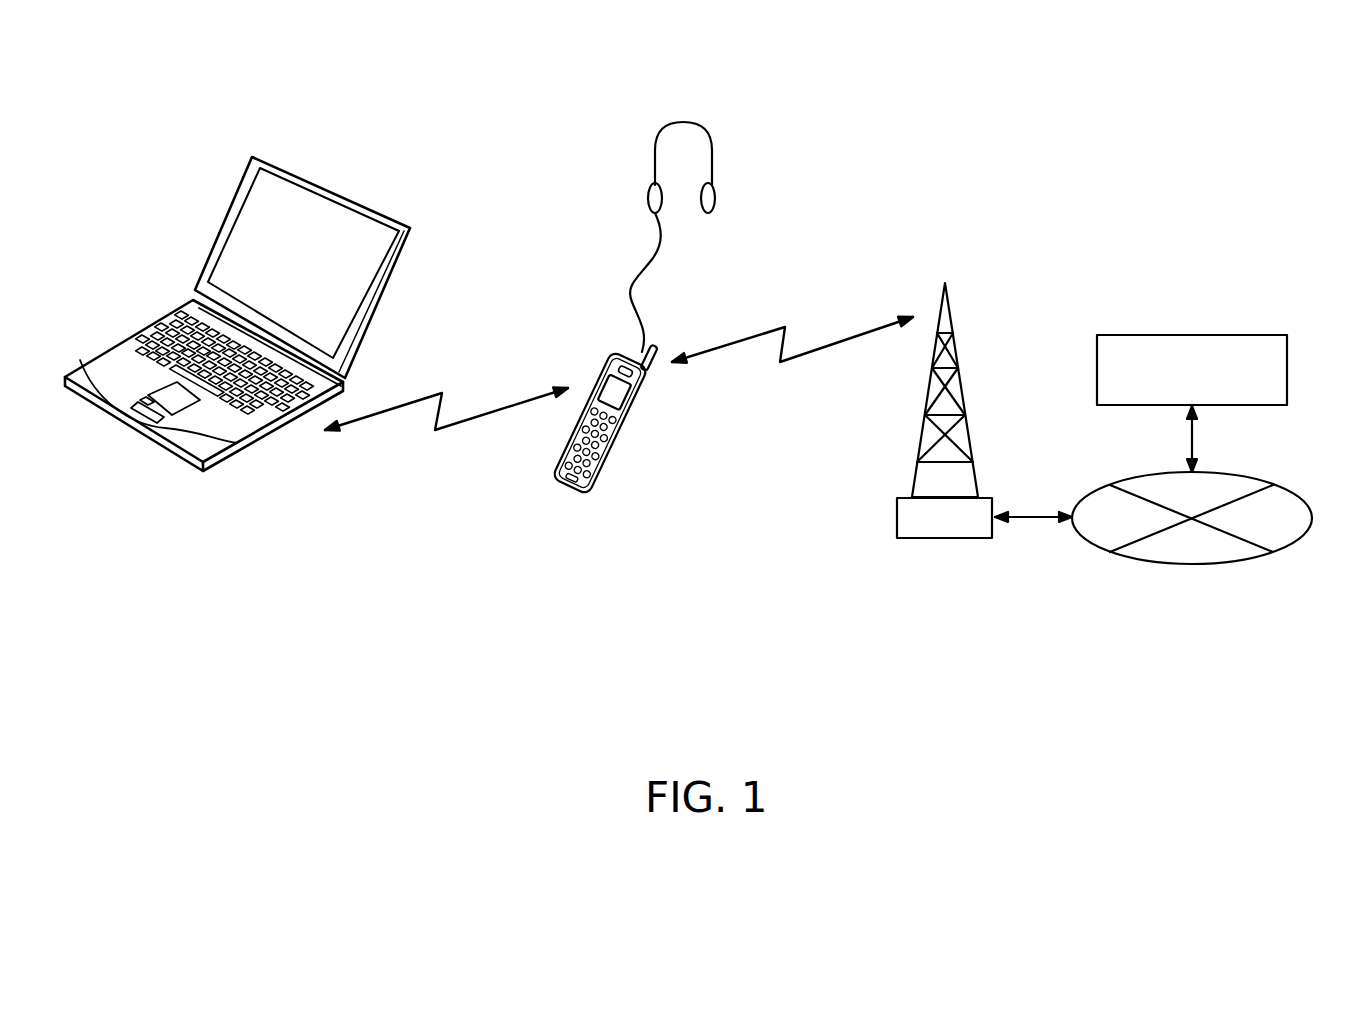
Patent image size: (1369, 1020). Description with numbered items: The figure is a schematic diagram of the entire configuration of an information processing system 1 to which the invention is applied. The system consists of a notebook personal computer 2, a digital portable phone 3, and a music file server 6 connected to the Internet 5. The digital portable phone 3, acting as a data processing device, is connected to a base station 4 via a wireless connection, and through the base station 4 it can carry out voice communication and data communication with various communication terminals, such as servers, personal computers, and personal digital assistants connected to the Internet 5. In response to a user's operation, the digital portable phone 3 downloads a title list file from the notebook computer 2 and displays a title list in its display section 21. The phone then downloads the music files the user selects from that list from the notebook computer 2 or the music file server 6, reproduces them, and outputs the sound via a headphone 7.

The information processing system 1 is at (1290, 134).
The notebook personal computer 2 is at (408, 222).
The digital portable phone 3 is at (624, 422).
The display section 21 is at (615, 392).
The base station 4 is at (952, 323).
The Internet 5 is at (1170, 566).
The music file server 6 is at (1247, 335).
The headphone 7 is at (711, 212).